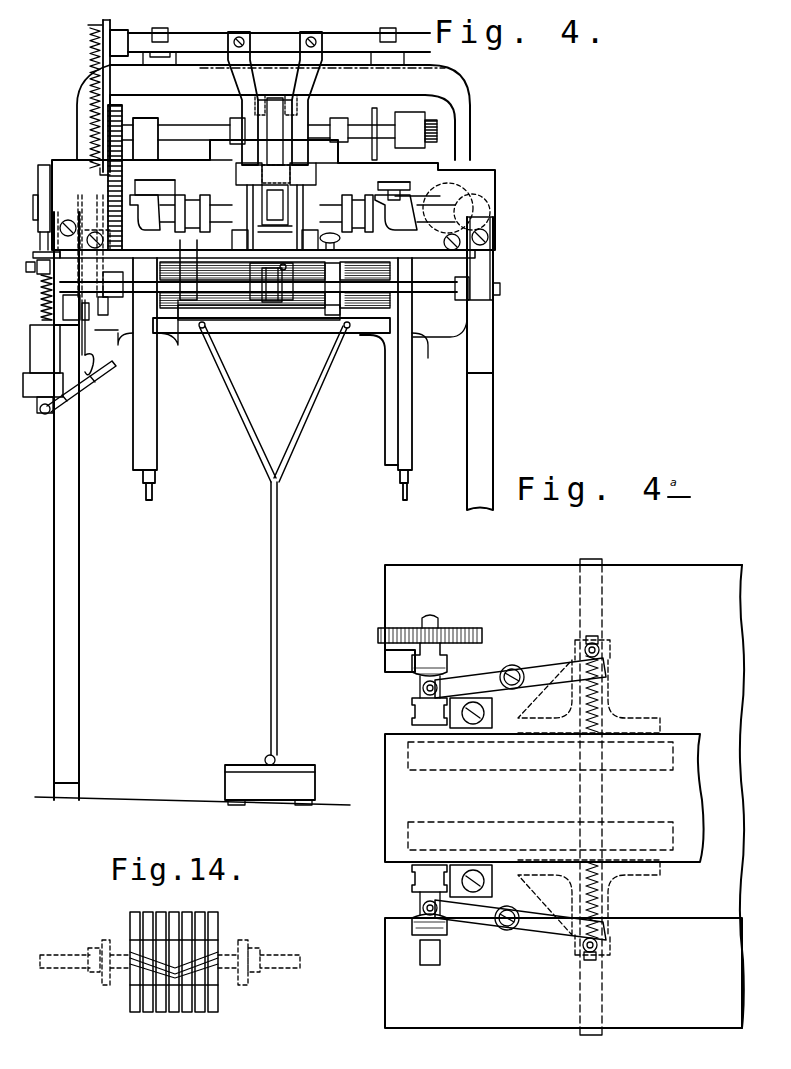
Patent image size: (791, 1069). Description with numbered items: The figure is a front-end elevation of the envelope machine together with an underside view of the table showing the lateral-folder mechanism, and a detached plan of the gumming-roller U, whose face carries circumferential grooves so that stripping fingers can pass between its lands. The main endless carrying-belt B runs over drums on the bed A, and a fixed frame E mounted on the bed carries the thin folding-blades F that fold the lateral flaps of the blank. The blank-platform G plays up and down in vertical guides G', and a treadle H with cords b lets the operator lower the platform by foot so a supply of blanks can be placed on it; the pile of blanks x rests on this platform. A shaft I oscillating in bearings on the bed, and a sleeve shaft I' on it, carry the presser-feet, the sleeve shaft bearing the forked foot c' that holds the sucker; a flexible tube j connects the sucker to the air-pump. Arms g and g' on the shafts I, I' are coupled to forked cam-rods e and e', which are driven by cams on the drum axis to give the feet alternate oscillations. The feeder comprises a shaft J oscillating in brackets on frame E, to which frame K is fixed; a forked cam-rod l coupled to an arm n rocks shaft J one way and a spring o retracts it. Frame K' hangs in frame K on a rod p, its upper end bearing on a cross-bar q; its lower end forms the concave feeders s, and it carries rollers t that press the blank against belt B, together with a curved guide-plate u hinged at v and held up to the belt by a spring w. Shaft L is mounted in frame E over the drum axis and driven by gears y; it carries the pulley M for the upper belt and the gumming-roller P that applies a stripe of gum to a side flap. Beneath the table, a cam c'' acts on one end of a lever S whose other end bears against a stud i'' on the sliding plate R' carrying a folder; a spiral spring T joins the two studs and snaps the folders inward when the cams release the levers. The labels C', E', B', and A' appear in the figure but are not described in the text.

In FIG. 4, the shaft J is at (279, 46).
In FIG. 4, the arm n is at (119, 43).
In FIG. 4, the forked cam-rod l is at (110, 78).
In FIG. 4, the spring o is at (92, 106).
In FIG. 4, the fixed frame E is at (290, 112).
In FIG. 4, the gears y is at (122, 110).
In FIG. 4A, the gears y is at (463, 630).
In FIG. 4, the shaft L is at (160, 126).
In FIG. 4, the pulley M is at (234, 118).
In FIG. 4, the gumming-roller P is at (372, 120).
In FIG. 4, the frame K is at (275, 98).
In FIG. 4, the spring w is at (275, 131).
In FIG. 4, the cross-bar q is at (297, 108).
In FIG. 4, the rod p is at (316, 175).
In FIG. 4, the frame K' is at (284, 217).
In FIG. 4, the curved guide-plate u is at (262, 208).
In FIG. 4, the hinge v is at (258, 228).
In FIG. 4, the rollers t is at (232, 236).
In FIG. 4, the main endless carrying-belt B is at (273, 199).
In FIG. 4A, the main endless carrying-belt B is at (544, 798).
In FIG. 4, the cam c'' is at (310, 208).
In FIG. 4A, the cam c'' is at (419, 804).
In FIG. 4, the presser-foot c' is at (266, 272).
In FIG. 4, the lever S is at (170, 186).
In FIG. 4A, the lever S is at (514, 799).
In FIG. 4, the post C' is at (34, 207).
In FIG. 4, the spring E' is at (35, 290).
In FIG. 4, the bracket B' is at (41, 277).
In FIG. 4, the block A' is at (43, 369).
In FIG. 4, the flexible tube j is at (97, 382).
In FIG. 4, the arm g is at (88, 337).
In FIG. 4, the forked cam-rod e is at (69, 306).
In FIG. 4, the forked cam-rod e' is at (90, 315).
In FIG. 4, the arm g' is at (113, 293).
In FIG. 4, the bed A is at (268, 506).
In FIG. 4A, the bed A is at (564, 796).
In FIG. 4, the tubular or sleeve shaft I' is at (258, 285).
In FIG. 4, the shaft I is at (413, 285).
In FIG. 4, the concave feeders s is at (276, 281).
In FIG. 4, the pile of blanks x is at (345, 300).
In FIG. 4, the blank-platform G is at (271, 319).
In FIG. 4, the vertical guides G' is at (281, 370).
In FIG. 4, the cords b is at (274, 538).
In FIG. 4, the treadle H is at (283, 770).
In FIG. 4A, the folding-blades F is at (642, 770).
In FIG. 4A, the sliding plate R' is at (600, 790).
In FIG. 4A, the spiral spring T is at (584, 717).
In FIG. 4A, the stud i'' is at (587, 798).
In FIG. 14, the gumming-roller U is at (170, 962).